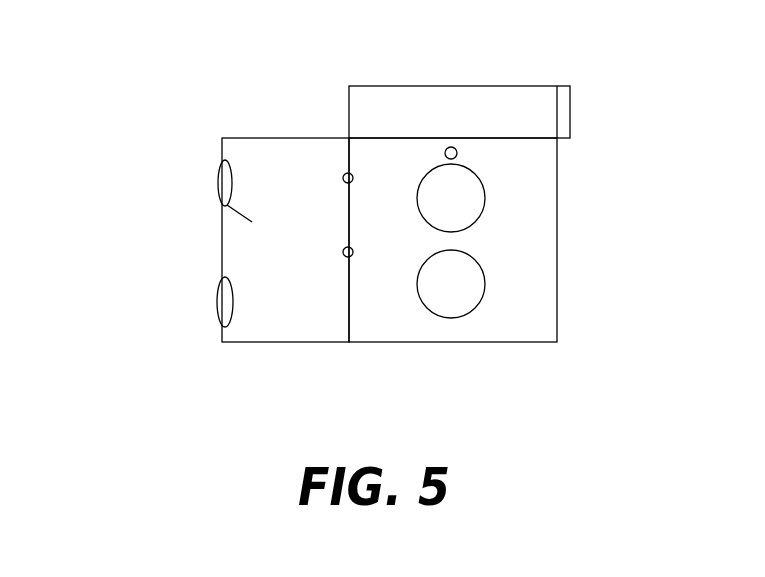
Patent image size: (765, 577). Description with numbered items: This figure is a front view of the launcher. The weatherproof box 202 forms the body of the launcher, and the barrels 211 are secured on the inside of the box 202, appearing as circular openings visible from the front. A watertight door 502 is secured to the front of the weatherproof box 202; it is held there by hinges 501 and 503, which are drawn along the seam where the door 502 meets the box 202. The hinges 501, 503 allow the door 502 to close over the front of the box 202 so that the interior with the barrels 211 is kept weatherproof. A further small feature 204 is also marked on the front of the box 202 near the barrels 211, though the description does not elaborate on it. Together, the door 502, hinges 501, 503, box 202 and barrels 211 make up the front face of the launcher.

The box 202 is at (518, 345).
The aperture 204 is at (455, 147).
The barrels 211 is at (472, 287).
The hinge 501 is at (349, 153).
The door 502 is at (220, 207).
The hinge 503 is at (337, 245).